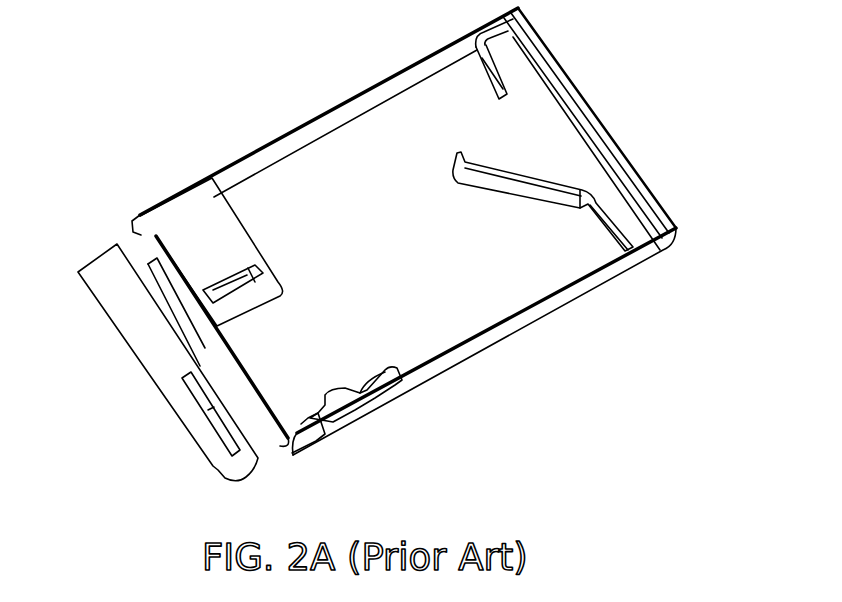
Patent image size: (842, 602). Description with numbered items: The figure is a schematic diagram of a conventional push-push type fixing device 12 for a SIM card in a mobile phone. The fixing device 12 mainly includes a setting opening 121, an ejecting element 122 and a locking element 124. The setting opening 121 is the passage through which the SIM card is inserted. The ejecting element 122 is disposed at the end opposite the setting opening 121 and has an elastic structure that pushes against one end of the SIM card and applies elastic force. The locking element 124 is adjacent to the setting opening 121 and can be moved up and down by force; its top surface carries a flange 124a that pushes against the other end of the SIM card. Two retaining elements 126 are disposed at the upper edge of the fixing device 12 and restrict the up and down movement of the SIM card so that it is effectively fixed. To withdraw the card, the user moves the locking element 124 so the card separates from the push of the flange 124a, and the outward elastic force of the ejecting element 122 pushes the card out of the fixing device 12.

The fixing device 12 is at (587, 39).
The setting opening 121 is at (240, 340).
The ejecting element 122 is at (518, 197).
The locking element 124 is at (118, 300).
The flange 124a is at (227, 440).
The retaining elements 126 is at (206, 213).